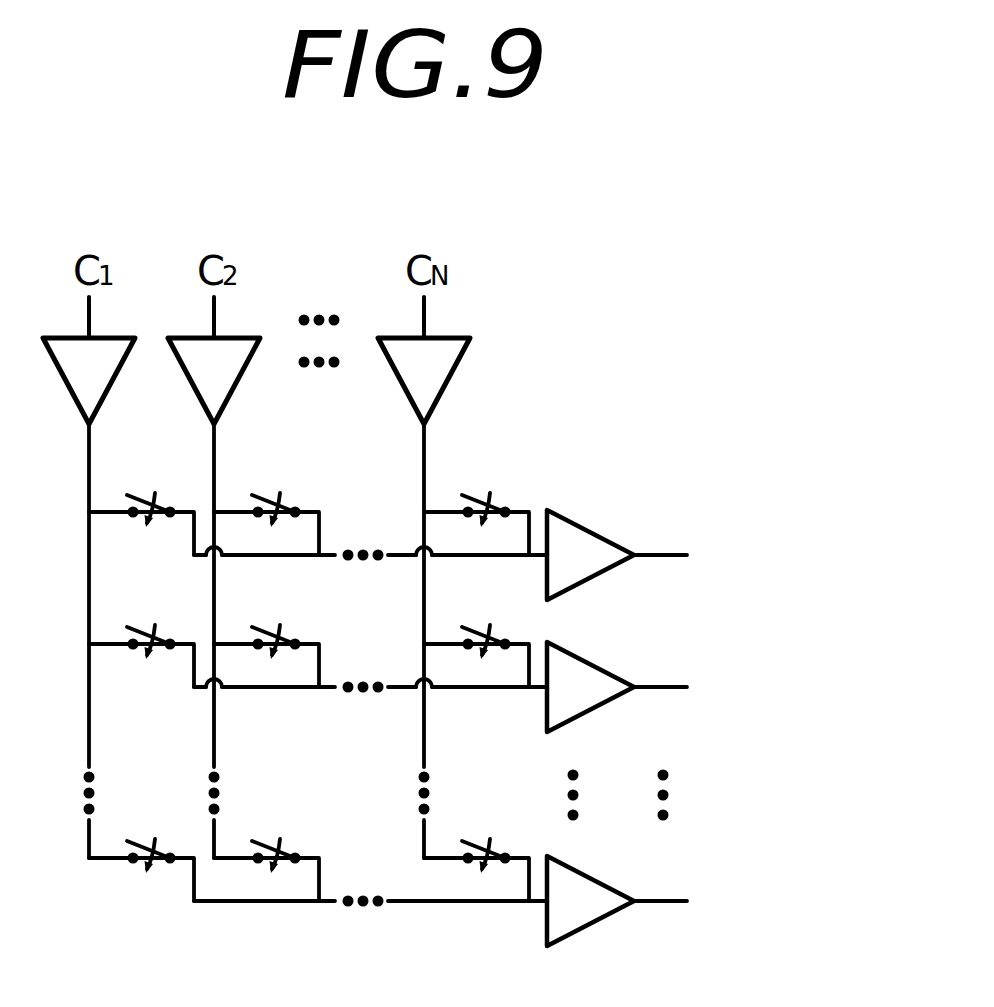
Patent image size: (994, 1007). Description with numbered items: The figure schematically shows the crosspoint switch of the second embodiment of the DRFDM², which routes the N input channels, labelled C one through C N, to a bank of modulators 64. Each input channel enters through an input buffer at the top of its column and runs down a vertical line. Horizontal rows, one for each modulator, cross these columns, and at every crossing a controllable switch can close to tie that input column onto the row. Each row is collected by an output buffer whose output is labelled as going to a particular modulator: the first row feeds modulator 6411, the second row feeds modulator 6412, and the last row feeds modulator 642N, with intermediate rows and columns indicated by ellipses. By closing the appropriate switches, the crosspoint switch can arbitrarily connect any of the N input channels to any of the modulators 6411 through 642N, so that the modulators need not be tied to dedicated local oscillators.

The modulators 64 is at (736, 728).
The modulator 6411 is at (734, 555).
The modulator 6412 is at (736, 687).
The modulator 642N is at (734, 901).